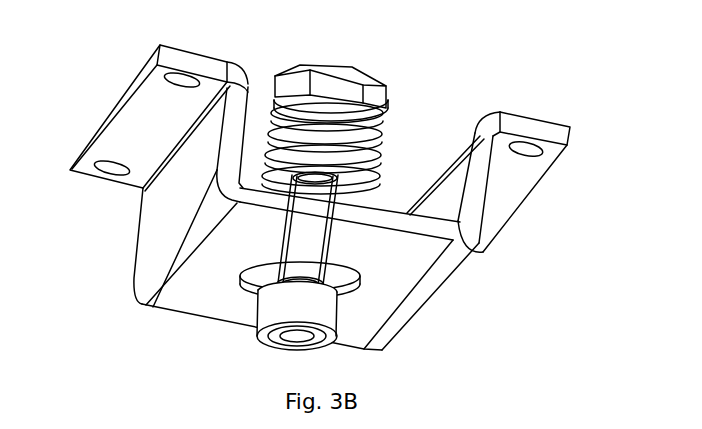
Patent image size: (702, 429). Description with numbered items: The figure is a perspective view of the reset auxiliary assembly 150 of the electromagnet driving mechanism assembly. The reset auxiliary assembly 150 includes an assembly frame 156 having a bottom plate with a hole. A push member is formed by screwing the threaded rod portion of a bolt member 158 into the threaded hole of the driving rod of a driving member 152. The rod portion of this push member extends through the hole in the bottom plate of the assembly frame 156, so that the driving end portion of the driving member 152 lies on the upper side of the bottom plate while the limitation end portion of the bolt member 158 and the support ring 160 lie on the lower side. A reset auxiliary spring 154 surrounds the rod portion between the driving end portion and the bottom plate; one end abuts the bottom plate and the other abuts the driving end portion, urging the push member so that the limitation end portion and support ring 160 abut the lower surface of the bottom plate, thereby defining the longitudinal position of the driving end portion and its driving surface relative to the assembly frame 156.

The reset auxiliary assembly 150 is at (505, 73).
The driving member 152 is at (343, 87).
The reset auxiliary spring 154 is at (363, 150).
The assembly frame 156 is at (148, 215).
The bolt member 158 is at (262, 312).
The support ring 160 is at (343, 281).